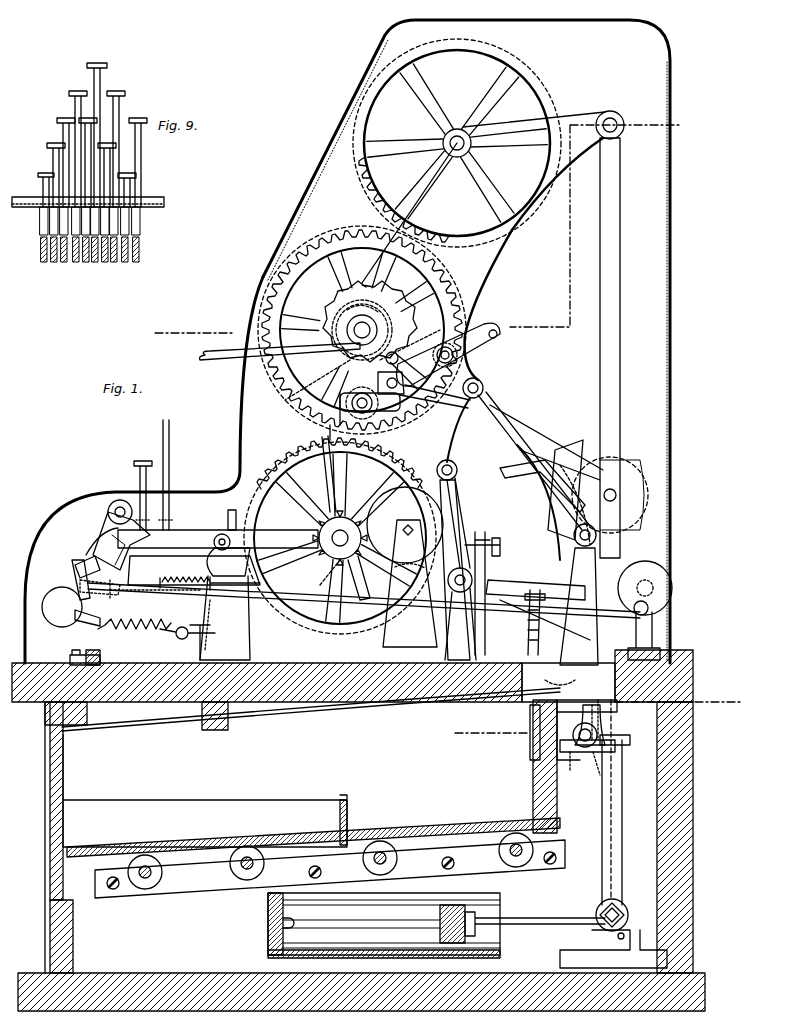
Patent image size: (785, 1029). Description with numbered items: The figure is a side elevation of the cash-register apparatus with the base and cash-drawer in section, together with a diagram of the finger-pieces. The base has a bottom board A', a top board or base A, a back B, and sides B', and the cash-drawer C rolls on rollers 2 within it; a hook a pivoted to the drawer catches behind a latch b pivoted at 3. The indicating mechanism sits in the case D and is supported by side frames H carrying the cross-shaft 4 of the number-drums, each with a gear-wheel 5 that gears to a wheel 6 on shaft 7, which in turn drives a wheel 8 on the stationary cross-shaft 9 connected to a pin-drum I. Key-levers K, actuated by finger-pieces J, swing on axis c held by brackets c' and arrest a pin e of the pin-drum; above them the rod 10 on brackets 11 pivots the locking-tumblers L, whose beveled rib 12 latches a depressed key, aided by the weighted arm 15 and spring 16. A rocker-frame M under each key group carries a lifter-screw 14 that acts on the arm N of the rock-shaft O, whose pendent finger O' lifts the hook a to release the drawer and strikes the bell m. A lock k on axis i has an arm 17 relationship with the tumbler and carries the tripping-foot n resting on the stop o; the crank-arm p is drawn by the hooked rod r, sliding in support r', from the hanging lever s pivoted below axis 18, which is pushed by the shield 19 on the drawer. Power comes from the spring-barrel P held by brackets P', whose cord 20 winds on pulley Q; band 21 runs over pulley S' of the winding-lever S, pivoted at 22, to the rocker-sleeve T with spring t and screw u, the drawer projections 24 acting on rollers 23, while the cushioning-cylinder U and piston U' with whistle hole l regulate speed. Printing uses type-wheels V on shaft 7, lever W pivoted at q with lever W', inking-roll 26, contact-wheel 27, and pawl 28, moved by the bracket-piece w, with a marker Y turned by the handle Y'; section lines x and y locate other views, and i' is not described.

In FIG. 9, the case D is at (152, 198).
In FIG. 1, the case D is at (272, 250).
In FIG. 9, the finger-pieces J is at (91, 135).
In FIG. 1, the finger-pieces J is at (140, 462).
In FIG. 9, the key-levers K is at (90, 242).
In FIG. 1, the key-levers K is at (198, 538).
In FIG. 1, the rod 10 is at (112, 490).
In FIG. 1, the pivot of winding-levers 22 is at (613, 113).
In FIG. 1, the section line x x is at (421, 224).
In FIG. 1, the winding-levers S is at (610, 348).
In FIG. 1, the side frames H is at (476, 300).
In FIG. 1, the gear-wheel 5 is at (457, 143).
In FIG. 1, the cross-shaft 4 is at (455, 158).
In FIG. 1, the gear-wheel 6 is at (362, 330).
In FIG. 1, the type-wheels V is at (362, 315).
In FIG. 1, the shaft 7 is at (350, 316).
In FIG. 1, the pulley Q is at (335, 352).
In FIG. 1, the marker Y is at (411, 332).
In FIG. 1, the handle Y' is at (304, 381).
In FIG. 1, the inking-roll 26 is at (420, 362).
In FIG. 1, the contact-wheel 27 is at (372, 375).
In FIG. 1, the stationary pawl 28 is at (340, 395).
In FIG. 1, the stationary cross-shaft 9 is at (482, 384).
In FIG. 1, the lever W is at (495, 457).
In FIG. 1, the cord or band 21 is at (520, 424).
In FIG. 1, the lever W' is at (566, 549).
In FIG. 1, the rocker-sleeve T is at (460, 470).
In FIG. 1, the cord or band 20 is at (444, 462).
In FIG. 1, the pulley S' is at (616, 495).
In FIG. 1, the stationary axis 18 is at (576, 541).
In FIG. 1, the bell m is at (645, 610).
In FIG. 1, the gear-wheel 8 is at (340, 536).
In FIG. 1, the pivot q is at (330, 535).
In FIG. 1, the pin e is at (348, 520).
In FIG. 1, the spring-barrel P is at (405, 525).
In FIG. 1, the brackets P' is at (410, 583).
In FIG. 1, the pin-drum I is at (352, 556).
In FIG. 1, the pivot pin or axis c is at (218, 522).
In FIG. 1, the brackets c' is at (225, 618).
In FIG. 1, the beveled rib 12 is at (108, 514).
In FIG. 1, the locking-tumblers L is at (104, 528).
In FIG. 1, the arm 17 is at (85, 546).
In FIG. 1, the lock k is at (76, 560).
In FIG. 1, the axis i is at (73, 579).
In FIG. 1, the weighted arm 15 is at (80, 586).
In FIG. 1, the crank-arm p is at (50, 596).
In FIG. 1, the hooked rod r is at (349, 600).
In FIG. 1, the tripping-foot n is at (78, 620).
In FIG. 1, the flanged stop o is at (68, 662).
In FIG. 1, the spring 16 is at (135, 622).
In FIG. 1, the brackets 11 is at (165, 640).
In FIG. 1, the rocker-frame M is at (194, 567).
In FIG. 1, the support r' is at (210, 583).
In FIG. 1, the link i' is at (212, 625).
In FIG. 1, the arm and spring t is at (458, 523).
In FIG. 1, the rock-shaft O is at (512, 604).
In FIG. 1, the adjustable screw u is at (494, 546).
In FIG. 1, the arm N is at (520, 590).
In FIG. 1, the lifter-screw 14 is at (541, 622).
In FIG. 1, the top board or base A is at (352, 695).
In FIG. 1, the hanging lever s is at (568, 682).
In FIG. 1, the sides B' is at (75, 837).
In FIG. 1, the bottom board A' is at (361, 981).
In FIG. 1, the back B is at (683, 837).
In FIG. 1, the cash-drawer C is at (311, 778).
In FIG. 1, the rollers 2 is at (330, 865).
In FIG. 1, the cushioning-cylinder U is at (384, 924).
In FIG. 1, the piston U' is at (511, 924).
In FIG. 1, the projections / air-valve 24 is at (270, 912).
In FIG. 1, the small hole l is at (384, 959).
In FIG. 1, the latch b is at (626, 838).
In FIG. 1, the pivot 3 is at (626, 950).
In FIG. 1, the hook a is at (620, 728).
In FIG. 1, the pendent finger O' is at (603, 725).
In FIG. 1, the section line y y is at (594, 726).
In FIG. 1, the bracket-piece w is at (620, 745).
In FIG. 1, the shield or metal plate 19 is at (564, 765).
In FIG. 1, the rollers 23 is at (593, 773).